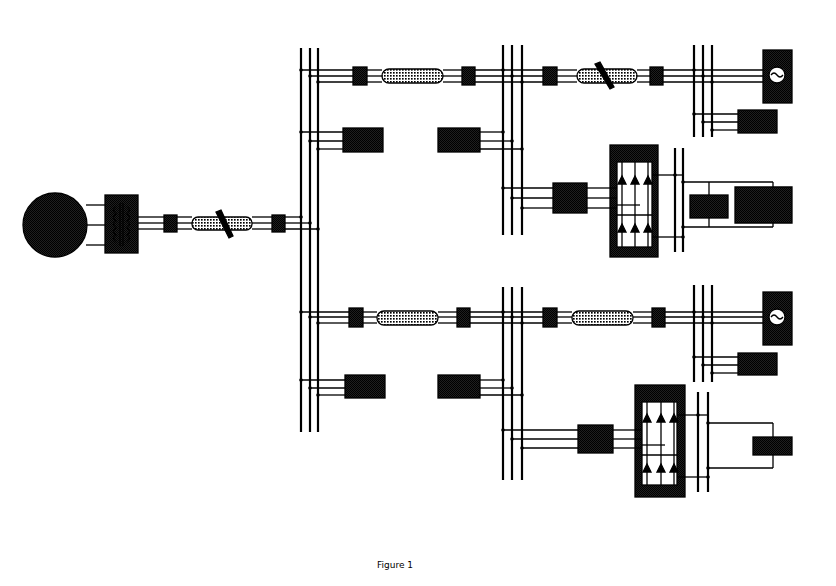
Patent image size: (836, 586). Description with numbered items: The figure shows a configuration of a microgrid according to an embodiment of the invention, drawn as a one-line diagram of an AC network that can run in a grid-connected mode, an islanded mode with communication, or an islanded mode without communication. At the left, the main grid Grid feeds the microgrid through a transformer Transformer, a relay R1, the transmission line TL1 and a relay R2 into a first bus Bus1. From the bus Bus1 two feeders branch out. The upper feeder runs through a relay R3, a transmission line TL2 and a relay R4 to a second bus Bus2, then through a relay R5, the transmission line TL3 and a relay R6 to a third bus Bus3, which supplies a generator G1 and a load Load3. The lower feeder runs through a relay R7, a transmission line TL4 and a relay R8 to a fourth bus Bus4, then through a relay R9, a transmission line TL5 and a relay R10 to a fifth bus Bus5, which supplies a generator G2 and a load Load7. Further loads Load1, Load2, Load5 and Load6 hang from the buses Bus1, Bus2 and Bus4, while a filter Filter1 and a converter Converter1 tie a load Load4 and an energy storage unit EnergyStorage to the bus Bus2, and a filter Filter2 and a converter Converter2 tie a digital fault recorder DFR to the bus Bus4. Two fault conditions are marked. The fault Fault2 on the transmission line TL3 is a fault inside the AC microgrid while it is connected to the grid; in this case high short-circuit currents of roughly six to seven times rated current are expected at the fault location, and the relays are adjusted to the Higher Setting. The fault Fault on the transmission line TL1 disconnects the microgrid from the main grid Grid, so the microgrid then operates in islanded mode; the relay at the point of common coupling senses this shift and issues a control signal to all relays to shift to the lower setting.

The main grid Grid is at (64, 225).
The transformer Transformer is at (121, 217).
The relay 1 R1 is at (170, 217).
The relay 2 R2 is at (277, 217).
The relay 3 R3 is at (360, 69).
The relay 4 R4 is at (468, 69).
The relay 5 R5 is at (550, 69).
The relay 6 R6 is at (656, 69).
The relay 7 R7 is at (356, 311).
The relay 8 R8 is at (463, 311).
The relay 9 R9 is at (550, 311).
The relay 10 R10 is at (657, 311).
The transmission line TL1 is at (222, 214).
The transmission line 2 TL2 is at (412, 70).
The transmission line TL3 is at (607, 66).
The transmission line 4 TL4 is at (407, 312).
The transmission line 5 TL5 is at (602, 312).
The bus 1 Bus1 is at (310, 233).
The bus 2 Bus2 is at (511, 134).
The bus 3 Bus3 is at (703, 85).
The bus 4 Bus4 is at (511, 377).
The bus 5 Bus5 is at (703, 327).
The generator 1 G1 is at (777, 70).
The generator 2 G2 is at (777, 312).
The fault at transmission line TL1 Fault is at (225, 232).
The fault at transmission line TL3 Fault2 is at (605, 83).
The power converter Converter1 is at (633, 195).
The power converter Converter2 is at (659, 435).
The filter Filter1 is at (570, 198).
The filter Filter2 is at (595, 439).
The energy storage EnergyStorage is at (763, 204).
The digital fault recorder DFR is at (750, 445).
The load Load1 is at (363, 140).
The load Load2 is at (459, 140).
The load Load3 is at (757, 121).
The load Load4 is at (709, 206).
The load Load5 is at (365, 386).
The load Load6 is at (459, 386).
The load Load7 is at (757, 364).